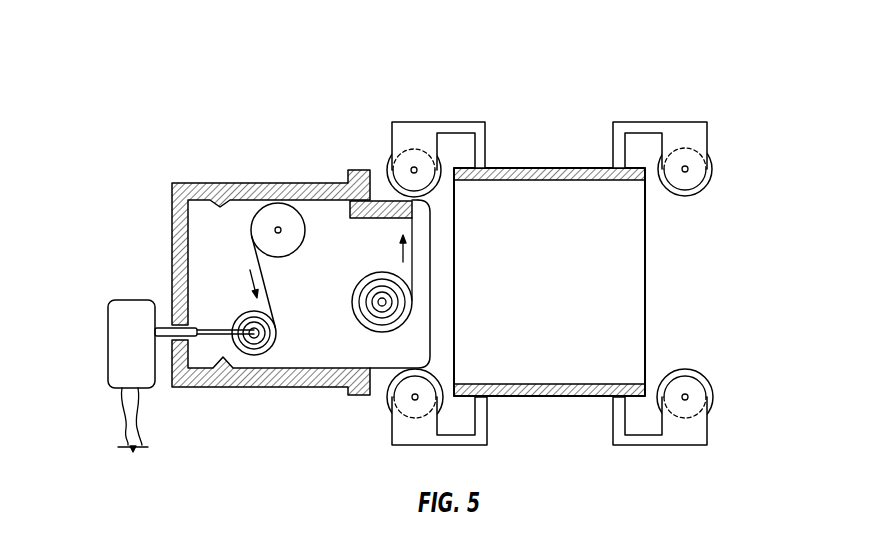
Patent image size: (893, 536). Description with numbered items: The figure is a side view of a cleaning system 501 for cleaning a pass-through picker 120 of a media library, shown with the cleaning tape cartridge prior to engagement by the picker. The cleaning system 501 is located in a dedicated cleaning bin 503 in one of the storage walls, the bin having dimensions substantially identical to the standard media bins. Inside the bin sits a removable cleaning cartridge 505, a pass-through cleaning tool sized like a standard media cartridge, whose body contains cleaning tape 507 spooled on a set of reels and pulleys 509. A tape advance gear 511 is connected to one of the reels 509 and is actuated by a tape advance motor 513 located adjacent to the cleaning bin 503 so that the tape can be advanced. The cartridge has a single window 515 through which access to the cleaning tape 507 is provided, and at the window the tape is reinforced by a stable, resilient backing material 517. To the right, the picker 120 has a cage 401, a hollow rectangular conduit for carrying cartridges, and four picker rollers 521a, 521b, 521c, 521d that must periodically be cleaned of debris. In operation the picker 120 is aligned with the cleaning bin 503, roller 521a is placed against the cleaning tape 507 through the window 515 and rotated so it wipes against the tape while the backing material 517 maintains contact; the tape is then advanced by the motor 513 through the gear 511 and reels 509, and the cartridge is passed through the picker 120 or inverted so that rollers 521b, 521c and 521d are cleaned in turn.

The cleaning system 501 is at (257, 67).
The cleaning bin 503 is at (268, 390).
The cleaning cartridge 505 is at (441, 230).
The cleaning tape 507 is at (270, 292).
The reels and pulleys 509 is at (267, 240).
The tape advance gear 511 is at (215, 325).
The tape advance motor 513 is at (125, 347).
The window 515 is at (390, 197).
The backing material 517 is at (393, 220).
The picker 120 is at (585, 282).
The cage 401 is at (553, 385).
The picker roller 521a is at (440, 168).
The picker roller 521b is at (712, 175).
The picker roller 521c is at (387, 400).
The picker roller 521d is at (697, 378).